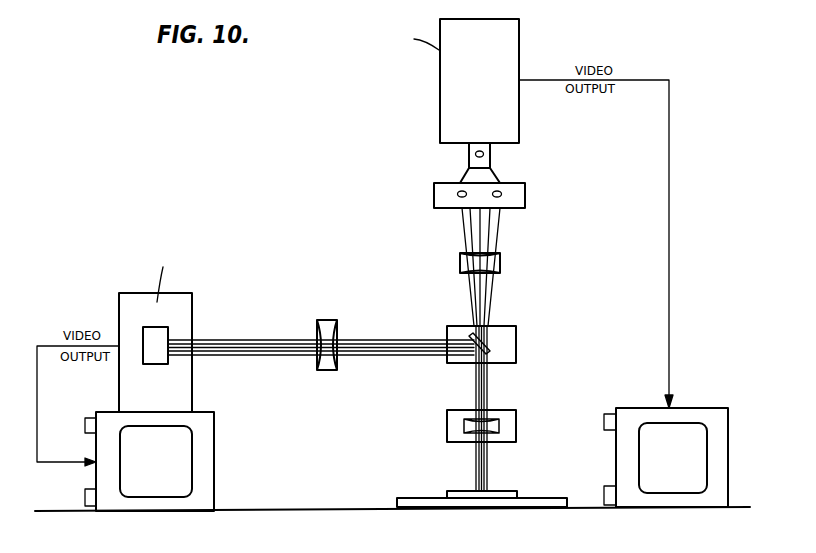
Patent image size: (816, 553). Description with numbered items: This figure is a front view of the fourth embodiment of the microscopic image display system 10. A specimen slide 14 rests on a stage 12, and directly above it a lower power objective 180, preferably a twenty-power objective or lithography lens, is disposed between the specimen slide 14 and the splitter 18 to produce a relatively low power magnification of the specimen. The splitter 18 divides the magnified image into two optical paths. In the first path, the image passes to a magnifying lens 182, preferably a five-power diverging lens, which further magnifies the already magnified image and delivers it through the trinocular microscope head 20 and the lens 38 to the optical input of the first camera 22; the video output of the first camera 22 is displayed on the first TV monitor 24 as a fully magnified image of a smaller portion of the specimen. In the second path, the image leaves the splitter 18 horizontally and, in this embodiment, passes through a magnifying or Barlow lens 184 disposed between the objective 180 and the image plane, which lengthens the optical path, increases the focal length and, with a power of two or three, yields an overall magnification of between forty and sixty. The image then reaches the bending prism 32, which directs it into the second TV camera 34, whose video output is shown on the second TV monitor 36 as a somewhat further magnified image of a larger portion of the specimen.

The microscopic image display system 10 is at (630, 42).
The stage 12 is at (504, 508).
The specimen slide 14 is at (506, 491).
The splitter 18 is at (490, 352).
The trinocular microscope head 20 is at (526, 197).
The first camera 22 is at (513, 47).
The first TV monitor 24 is at (702, 407).
The bending prism 32 is at (168, 364).
The second TV camera 34 is at (127, 312).
The second TV monitor 36 is at (203, 451).
The lens of camera 38 is at (491, 155).
The lower power objective 180 is at (499, 425).
The magnifying lens 182 is at (500, 262).
The Barlow lens 184 is at (323, 320).